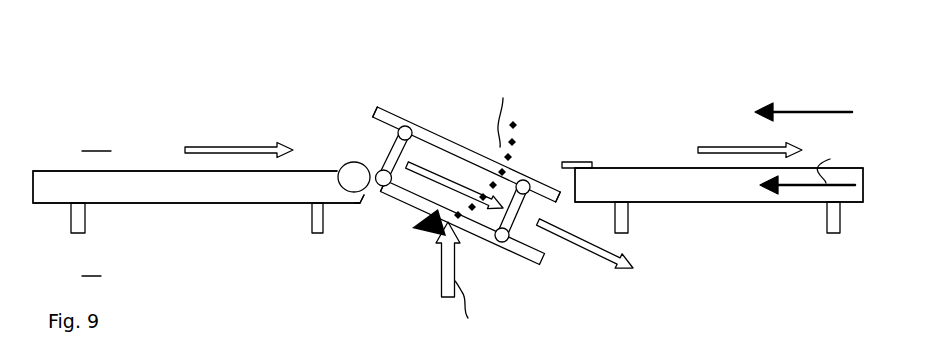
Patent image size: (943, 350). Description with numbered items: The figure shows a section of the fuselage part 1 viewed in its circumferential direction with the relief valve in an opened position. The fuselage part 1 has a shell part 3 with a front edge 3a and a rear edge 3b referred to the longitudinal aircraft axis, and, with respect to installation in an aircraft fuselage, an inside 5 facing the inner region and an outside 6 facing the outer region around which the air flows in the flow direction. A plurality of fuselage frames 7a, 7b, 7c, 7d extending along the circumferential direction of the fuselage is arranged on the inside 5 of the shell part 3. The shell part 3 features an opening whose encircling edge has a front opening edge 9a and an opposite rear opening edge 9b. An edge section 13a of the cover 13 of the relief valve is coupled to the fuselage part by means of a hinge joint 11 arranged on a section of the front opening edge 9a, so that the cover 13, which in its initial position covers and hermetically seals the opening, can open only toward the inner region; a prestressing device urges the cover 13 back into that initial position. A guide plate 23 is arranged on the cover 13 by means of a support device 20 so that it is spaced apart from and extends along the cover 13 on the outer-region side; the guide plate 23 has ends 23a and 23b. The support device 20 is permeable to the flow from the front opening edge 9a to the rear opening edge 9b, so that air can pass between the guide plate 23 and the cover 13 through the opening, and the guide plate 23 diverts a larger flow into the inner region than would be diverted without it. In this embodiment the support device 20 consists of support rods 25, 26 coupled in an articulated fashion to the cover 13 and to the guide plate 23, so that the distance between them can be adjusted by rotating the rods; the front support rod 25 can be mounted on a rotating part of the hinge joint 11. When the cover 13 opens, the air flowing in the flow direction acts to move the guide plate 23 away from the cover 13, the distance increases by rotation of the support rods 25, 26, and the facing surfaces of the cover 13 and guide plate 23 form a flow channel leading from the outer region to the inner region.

The fuselage part 1 is at (604, 96).
The shell part 3 is at (163, 179).
The front edge 3a is at (30, 190).
The rear edge 3b is at (866, 191).
The inside 5 is at (226, 204).
The outside 6 is at (37, 171).
The fuselage frame 7a is at (85, 223).
The fuselage frame 7b is at (312, 221).
The fuselage frame 7c is at (628, 223).
The fuselage frame 7d is at (828, 223).
The front opening edge 9a is at (364, 195).
The rear opening edge 9b is at (574, 186).
The hinge joint 11 is at (350, 166).
The cover 13 is at (574, 162).
The edge section 13a is at (378, 193).
The support device 20 is at (349, 117).
The guide plate 23 is at (447, 138).
The first arm end 23a is at (379, 109).
The second arm end 23b is at (547, 188).
The front support rod 25 is at (384, 153).
The support rod 26 is at (542, 233).